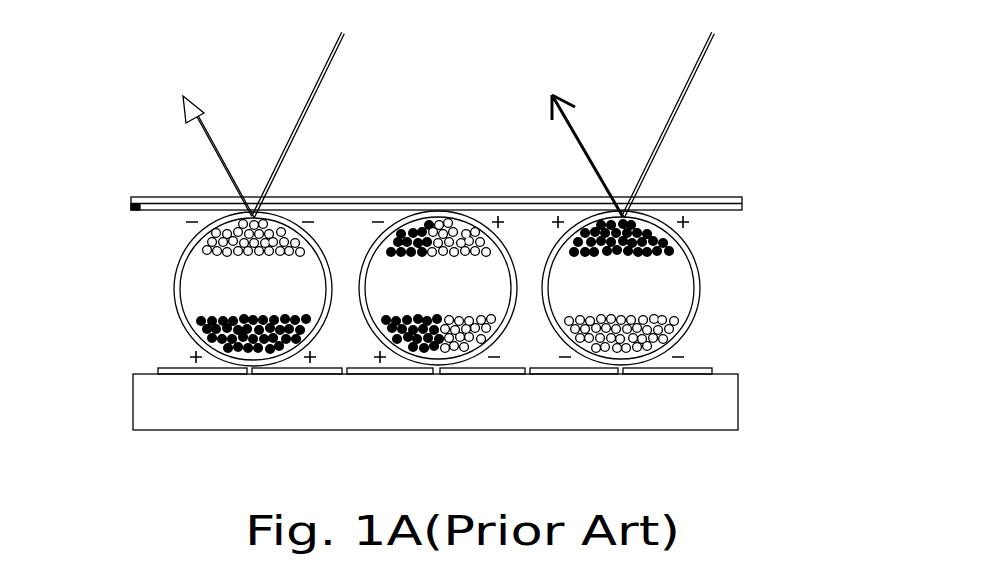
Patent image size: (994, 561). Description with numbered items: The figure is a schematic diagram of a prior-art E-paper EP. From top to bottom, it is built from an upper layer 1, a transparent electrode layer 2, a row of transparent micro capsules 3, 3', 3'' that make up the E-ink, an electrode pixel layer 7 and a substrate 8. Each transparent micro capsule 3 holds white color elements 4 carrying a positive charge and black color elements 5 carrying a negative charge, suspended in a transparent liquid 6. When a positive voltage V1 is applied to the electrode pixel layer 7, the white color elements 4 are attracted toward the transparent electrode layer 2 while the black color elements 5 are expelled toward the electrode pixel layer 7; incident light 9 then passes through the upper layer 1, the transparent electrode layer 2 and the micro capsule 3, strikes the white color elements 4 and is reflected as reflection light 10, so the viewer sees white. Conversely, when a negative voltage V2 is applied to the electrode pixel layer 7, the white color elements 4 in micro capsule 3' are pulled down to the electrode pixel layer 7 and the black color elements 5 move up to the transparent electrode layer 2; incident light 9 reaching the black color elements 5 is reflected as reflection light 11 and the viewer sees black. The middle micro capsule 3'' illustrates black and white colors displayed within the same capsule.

The upper layer 1 is at (142, 198).
The transparent electrode layer 2 is at (131, 207).
The transparent micro capsule 3 is at (233, 289).
The transparent micro capsule 3' is at (666, 288).
The micro capsule 3'' is at (438, 234).
The white color elements 4 is at (207, 258).
The black color elements 5 is at (207, 330).
The transparent liquid 6 is at (253, 289).
The electrode pixel layer 7 is at (158, 371).
The substrate 8 is at (435, 402).
The incident light 9 is at (488, 124).
The reflection light 10 is at (218, 157).
The reflection light 11 is at (587, 156).
The positive voltage V1 is at (146, 357).
The negative voltage V2 is at (718, 355).
The E-paper EP is at (161, 493).